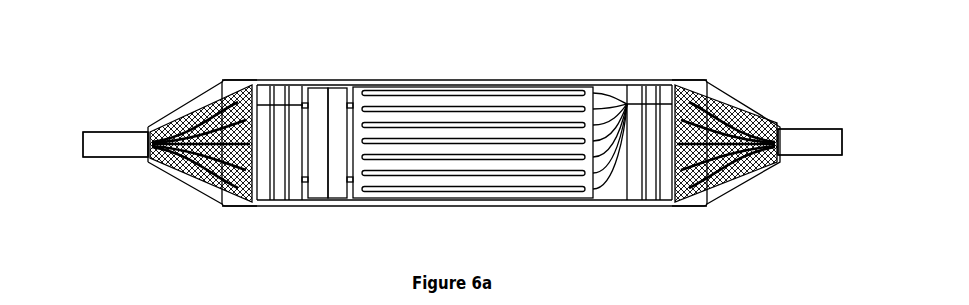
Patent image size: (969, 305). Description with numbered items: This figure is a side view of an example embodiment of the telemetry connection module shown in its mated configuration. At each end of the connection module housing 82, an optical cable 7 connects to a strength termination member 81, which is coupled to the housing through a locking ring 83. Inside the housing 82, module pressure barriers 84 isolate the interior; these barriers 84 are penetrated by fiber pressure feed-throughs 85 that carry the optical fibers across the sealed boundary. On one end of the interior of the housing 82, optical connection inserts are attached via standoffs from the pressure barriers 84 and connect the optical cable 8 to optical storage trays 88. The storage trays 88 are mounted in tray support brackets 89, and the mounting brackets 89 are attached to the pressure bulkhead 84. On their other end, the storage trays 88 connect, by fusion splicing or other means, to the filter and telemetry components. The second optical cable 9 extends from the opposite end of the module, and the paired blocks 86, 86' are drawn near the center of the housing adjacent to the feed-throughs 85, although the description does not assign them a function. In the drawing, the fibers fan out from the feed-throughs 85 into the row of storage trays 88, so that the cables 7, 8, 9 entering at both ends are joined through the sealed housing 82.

The optical cable 7 is at (110, 159).
The optical cable 8 is at (122, 142).
The second optical cable 9 is at (810, 140).
The strength termination member 81 is at (198, 100).
The connection module housing 82 is at (465, 78).
The locking ring 83 is at (232, 80).
The module pressure barrier 84 is at (292, 206).
The fiber pressure feed-through 85 is at (300, 103).
The splice holder block 86 is at (304, 113).
The splice holder block half 86' is at (355, 113).
The optical storage tray 88 is at (510, 172).
The tray support bracket 89 is at (415, 199).